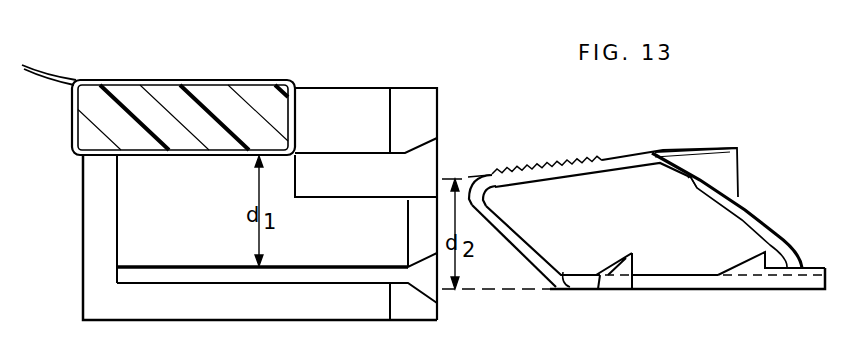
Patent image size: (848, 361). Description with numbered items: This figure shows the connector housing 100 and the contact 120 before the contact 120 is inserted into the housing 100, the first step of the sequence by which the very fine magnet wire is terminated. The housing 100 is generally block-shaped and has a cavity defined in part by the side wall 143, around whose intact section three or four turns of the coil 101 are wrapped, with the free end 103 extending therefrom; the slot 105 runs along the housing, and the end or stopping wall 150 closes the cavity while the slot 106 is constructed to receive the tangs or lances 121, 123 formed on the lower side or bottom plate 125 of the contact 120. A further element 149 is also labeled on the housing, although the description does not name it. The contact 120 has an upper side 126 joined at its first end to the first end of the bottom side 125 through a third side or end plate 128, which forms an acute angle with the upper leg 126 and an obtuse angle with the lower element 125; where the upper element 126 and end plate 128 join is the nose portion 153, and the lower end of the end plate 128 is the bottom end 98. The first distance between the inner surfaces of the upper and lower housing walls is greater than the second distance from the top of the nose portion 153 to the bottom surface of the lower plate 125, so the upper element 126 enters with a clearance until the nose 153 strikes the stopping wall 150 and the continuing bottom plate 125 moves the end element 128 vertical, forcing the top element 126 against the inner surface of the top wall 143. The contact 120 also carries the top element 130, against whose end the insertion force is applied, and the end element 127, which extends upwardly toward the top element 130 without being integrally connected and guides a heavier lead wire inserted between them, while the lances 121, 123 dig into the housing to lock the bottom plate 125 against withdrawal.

The bottom end of end plate 98 is at (562, 276).
The connector housing 100 is at (243, 76).
The coil 101 is at (172, 88).
The free end of coil 103 is at (50, 77).
The slot 105 is at (52, 357).
The slot 106 is at (165, 278).
The contact 120 is at (632, 294).
The tang or lance 121 is at (748, 272).
The tang or lance 123 is at (600, 283).
The lower side or bottom plate of contact 125 is at (631, 254).
The upper side or top element of contact 126 is at (553, 162).
The end element 127 is at (778, 230).
The third side or end plate 128 is at (535, 250).
The top element 130 is at (720, 150).
The side wall or upper wall of housing 143 is at (365, 86).
The insulating sleeve 149 is at (142, 97).
The end or stopping wall 150 is at (117, 238).
The nose portion 153 is at (490, 172).